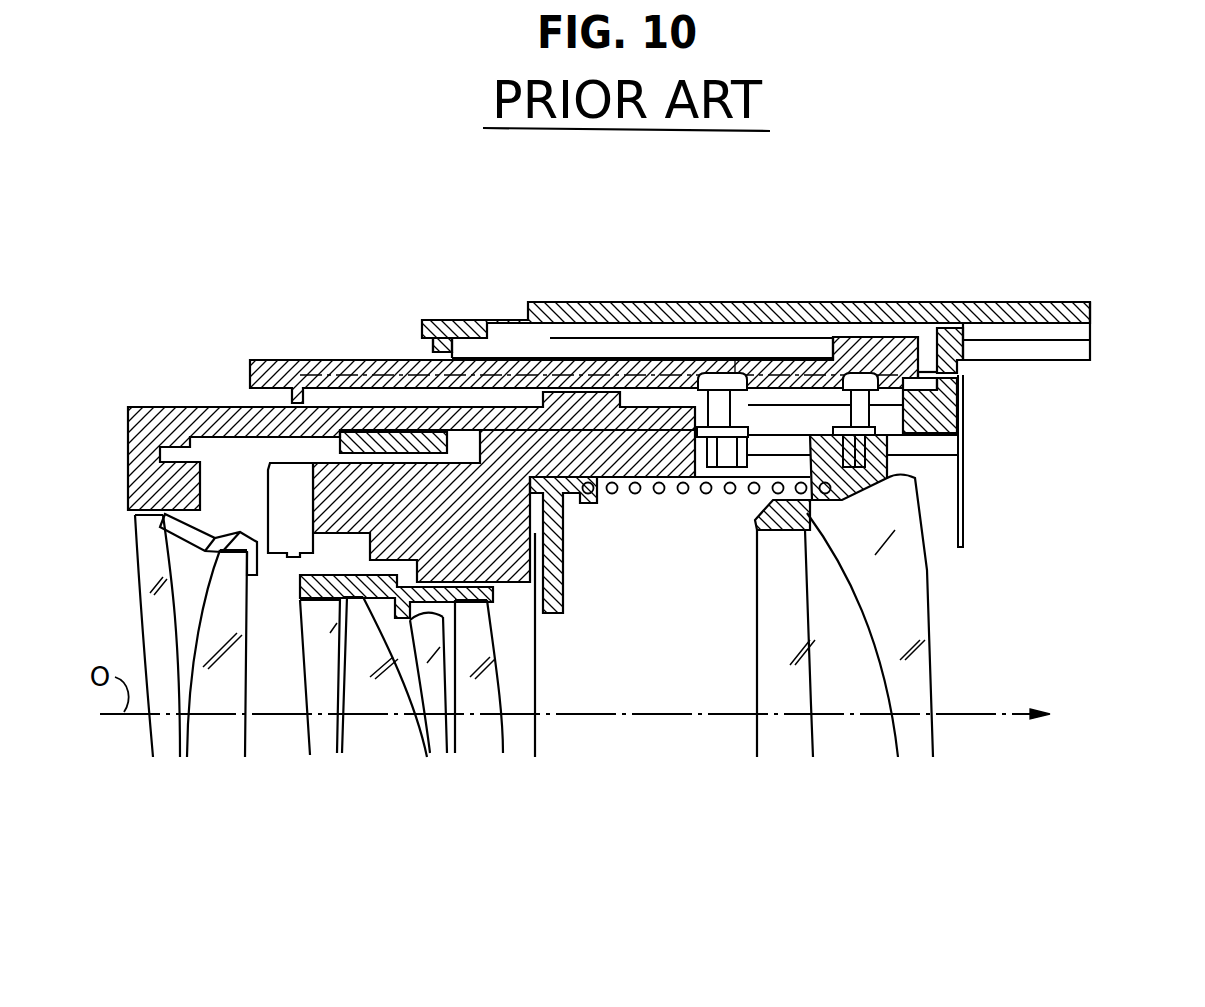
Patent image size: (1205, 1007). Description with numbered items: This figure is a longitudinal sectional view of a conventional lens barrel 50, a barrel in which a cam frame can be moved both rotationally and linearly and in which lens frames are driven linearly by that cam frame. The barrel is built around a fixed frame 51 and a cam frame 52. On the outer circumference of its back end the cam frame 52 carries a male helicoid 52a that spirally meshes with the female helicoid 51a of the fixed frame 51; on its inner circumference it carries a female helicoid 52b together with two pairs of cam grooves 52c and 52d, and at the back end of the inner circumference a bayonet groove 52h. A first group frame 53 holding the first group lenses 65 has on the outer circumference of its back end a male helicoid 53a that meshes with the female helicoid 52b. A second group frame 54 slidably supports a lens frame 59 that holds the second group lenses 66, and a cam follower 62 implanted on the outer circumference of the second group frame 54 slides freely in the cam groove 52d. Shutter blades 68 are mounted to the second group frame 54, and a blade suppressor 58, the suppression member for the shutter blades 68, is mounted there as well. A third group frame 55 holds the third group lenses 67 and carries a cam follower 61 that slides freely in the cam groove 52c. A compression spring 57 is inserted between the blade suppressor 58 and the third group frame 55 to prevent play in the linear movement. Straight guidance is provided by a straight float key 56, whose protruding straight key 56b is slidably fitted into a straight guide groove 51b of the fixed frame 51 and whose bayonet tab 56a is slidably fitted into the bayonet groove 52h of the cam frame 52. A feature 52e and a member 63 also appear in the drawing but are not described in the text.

The lens barrel 50 is at (1016, 294).
The fixed frame 51 is at (543, 302).
The female helicoid 51a is at (470, 338).
The straight guide groove 51b is at (1078, 332).
The cam frame 52 is at (322, 362).
The male helicoid 52a is at (900, 335).
The female helicoid 52b is at (342, 368).
The cam groove 52c is at (835, 358).
The cam groove 52d is at (738, 366).
The cam ring groove 52e is at (958, 390).
The bayonet groove 52h is at (928, 372).
The first group frame 53 is at (158, 412).
The male helicoid 53a is at (620, 398).
The second group frame 54 is at (330, 470).
The third group frame 55 is at (887, 480).
The straight float key 56 is at (947, 423).
The bayonet tab 56a is at (928, 372).
The straight key 56b is at (950, 328).
The compression spring 57 is at (653, 494).
The blade suppressor 58 is at (565, 578).
The lens frame 59 is at (276, 590).
The cam follower 61 is at (848, 372).
The cam follower 62 is at (725, 372).
The thin plate 63 is at (963, 452).
The first group lenses 65 is at (162, 740).
The second group lenses 66 is at (323, 740).
The third group lenses 67 is at (800, 740).
The shutter blades 68 is at (535, 733).